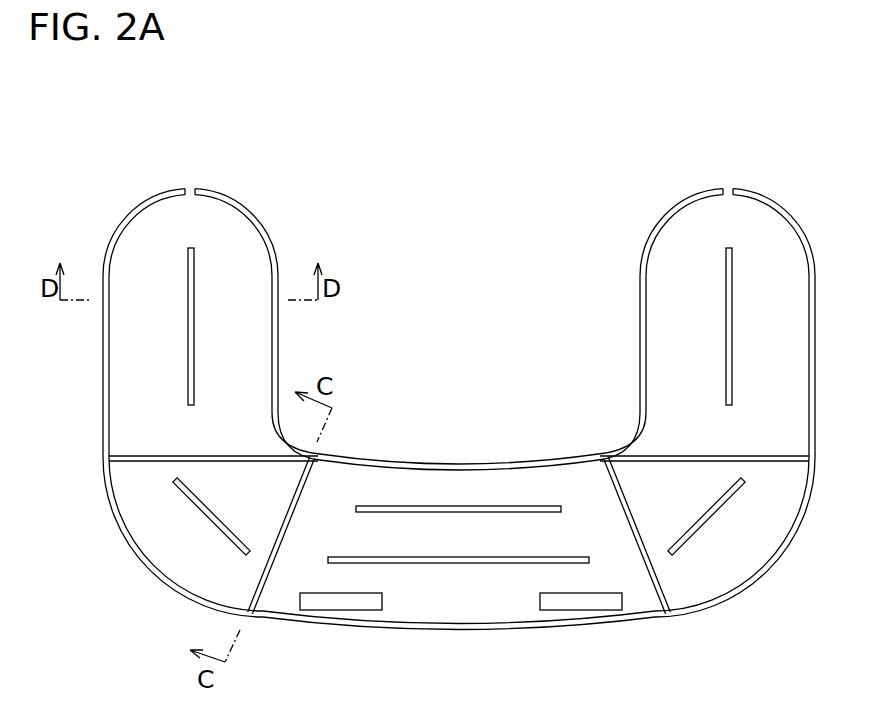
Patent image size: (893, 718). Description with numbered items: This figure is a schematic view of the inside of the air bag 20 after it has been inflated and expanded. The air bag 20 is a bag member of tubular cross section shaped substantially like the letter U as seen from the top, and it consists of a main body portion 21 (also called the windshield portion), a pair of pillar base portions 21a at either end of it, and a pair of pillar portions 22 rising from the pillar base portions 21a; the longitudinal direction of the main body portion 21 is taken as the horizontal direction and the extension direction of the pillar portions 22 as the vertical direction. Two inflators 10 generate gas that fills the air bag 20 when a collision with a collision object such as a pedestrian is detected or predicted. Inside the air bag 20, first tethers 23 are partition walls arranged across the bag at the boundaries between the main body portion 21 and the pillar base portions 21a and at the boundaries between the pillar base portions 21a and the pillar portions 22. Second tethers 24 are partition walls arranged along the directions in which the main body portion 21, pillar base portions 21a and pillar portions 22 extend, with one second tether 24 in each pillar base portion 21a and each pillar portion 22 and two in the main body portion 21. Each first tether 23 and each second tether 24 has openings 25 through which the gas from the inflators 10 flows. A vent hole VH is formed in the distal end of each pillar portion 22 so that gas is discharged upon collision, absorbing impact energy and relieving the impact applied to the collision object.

The inflator 10 is at (357, 610).
The air bag 20 is at (462, 196).
The main body portion 21 is at (694, 652).
The pillar base portion 21a is at (229, 636).
The pillar portion 22 is at (57, 189).
The first tether 23 is at (307, 478).
The second tether 24 is at (188, 332).
The opening 25 is at (188, 350).
The vent hole VH is at (202, 172).